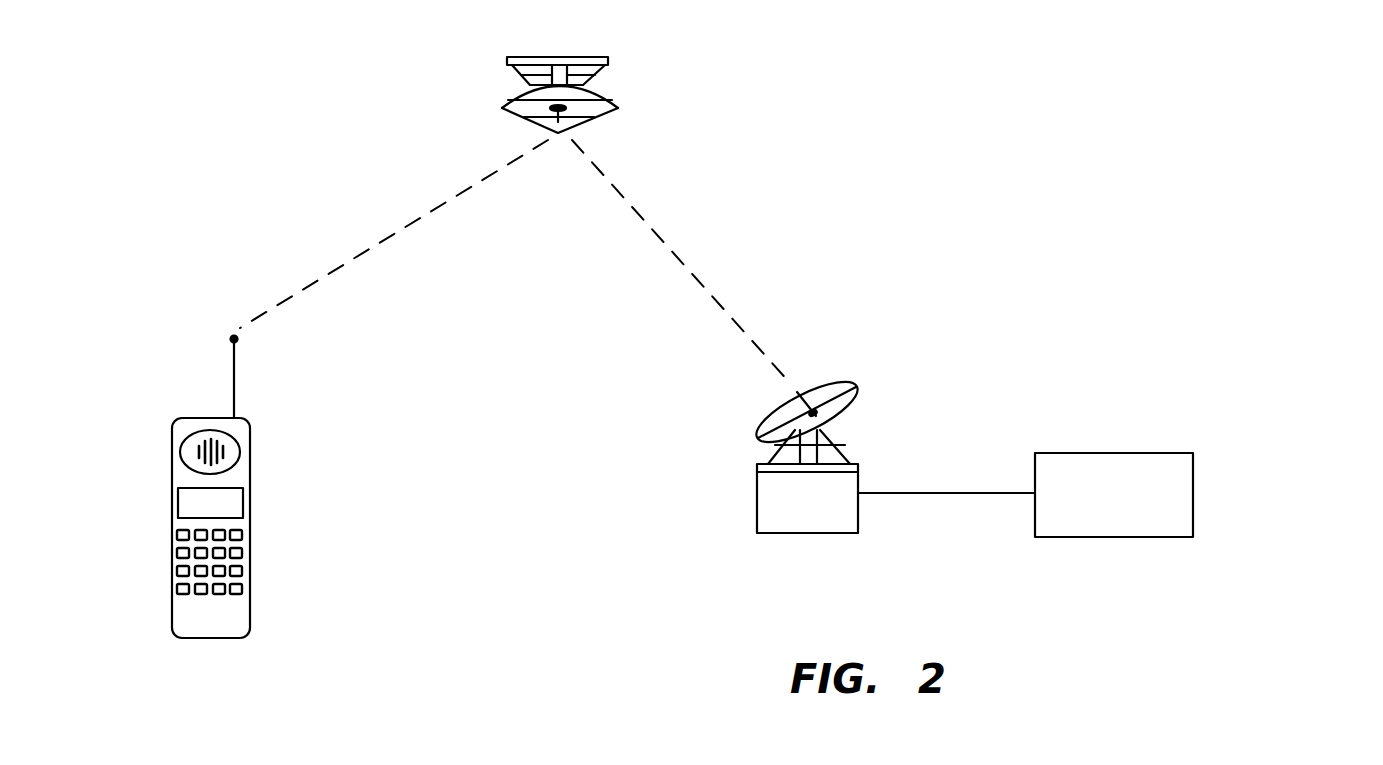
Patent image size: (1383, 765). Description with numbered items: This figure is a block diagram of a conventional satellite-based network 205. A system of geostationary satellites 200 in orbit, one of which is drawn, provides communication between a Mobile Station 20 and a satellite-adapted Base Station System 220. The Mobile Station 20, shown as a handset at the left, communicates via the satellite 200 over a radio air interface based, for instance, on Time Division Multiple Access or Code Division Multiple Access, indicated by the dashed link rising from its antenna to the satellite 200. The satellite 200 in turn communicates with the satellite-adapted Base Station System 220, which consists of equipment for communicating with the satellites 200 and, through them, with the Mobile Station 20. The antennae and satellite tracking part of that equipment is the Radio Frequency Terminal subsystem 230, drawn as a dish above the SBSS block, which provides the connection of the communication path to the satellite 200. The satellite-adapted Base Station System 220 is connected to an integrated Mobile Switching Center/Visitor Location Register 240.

The Mobile Station 20 is at (172, 535).
The geostationary satellite 200 is at (606, 99).
The satellite-based network 205 is at (1262, 152).
The satellite-adapted Base Station System 220 is at (729, 383).
The Radio Frequency Terminal subsystem 230 is at (838, 437).
The integrated Mobile Switching Center/Visitor Location Register 240 is at (1110, 453).